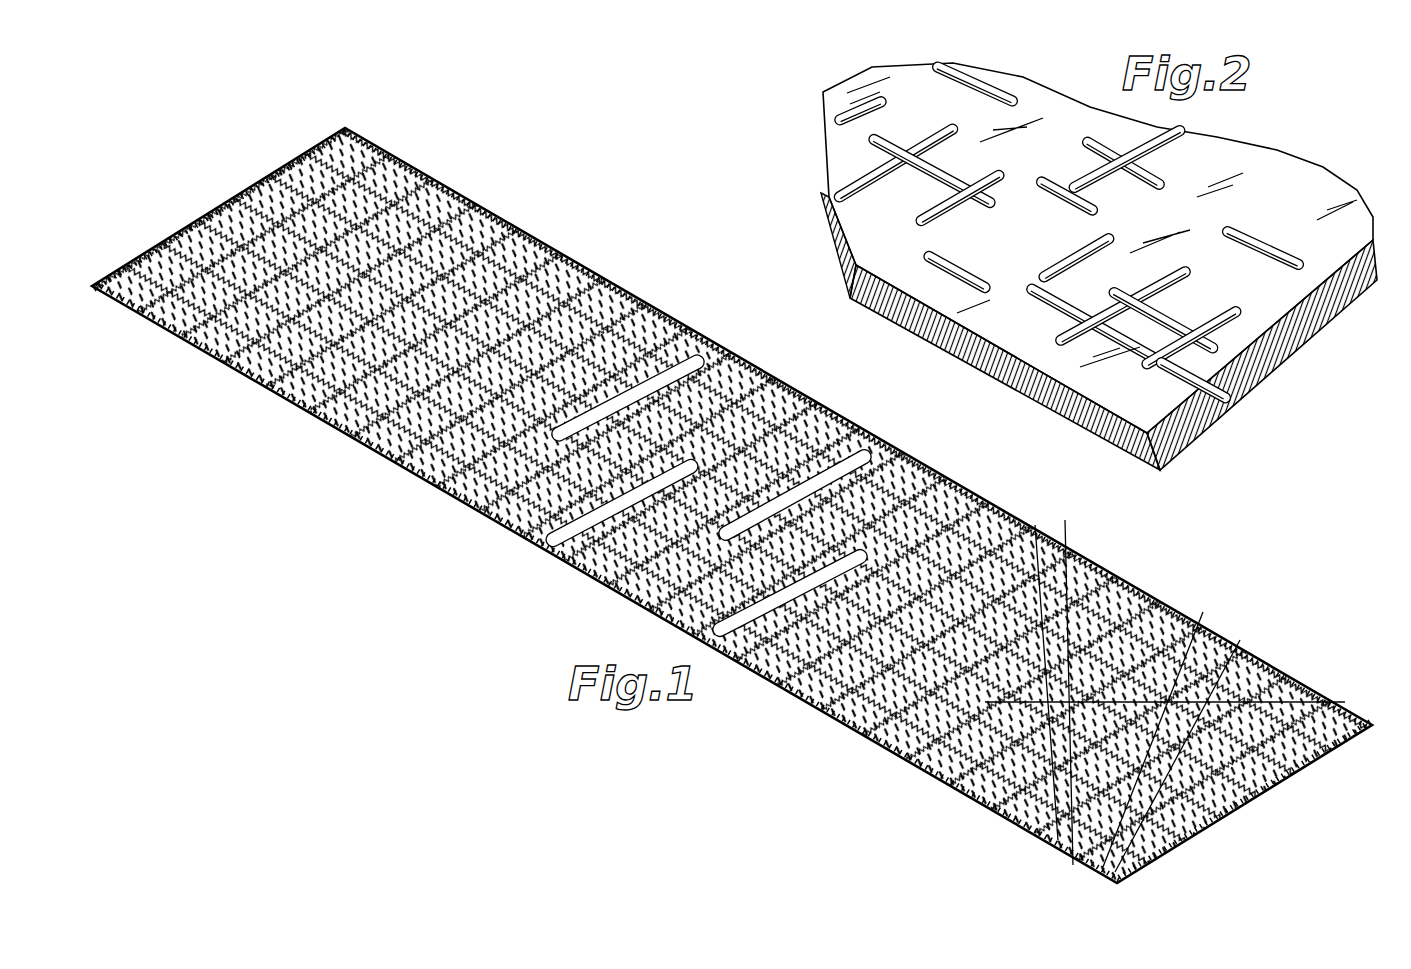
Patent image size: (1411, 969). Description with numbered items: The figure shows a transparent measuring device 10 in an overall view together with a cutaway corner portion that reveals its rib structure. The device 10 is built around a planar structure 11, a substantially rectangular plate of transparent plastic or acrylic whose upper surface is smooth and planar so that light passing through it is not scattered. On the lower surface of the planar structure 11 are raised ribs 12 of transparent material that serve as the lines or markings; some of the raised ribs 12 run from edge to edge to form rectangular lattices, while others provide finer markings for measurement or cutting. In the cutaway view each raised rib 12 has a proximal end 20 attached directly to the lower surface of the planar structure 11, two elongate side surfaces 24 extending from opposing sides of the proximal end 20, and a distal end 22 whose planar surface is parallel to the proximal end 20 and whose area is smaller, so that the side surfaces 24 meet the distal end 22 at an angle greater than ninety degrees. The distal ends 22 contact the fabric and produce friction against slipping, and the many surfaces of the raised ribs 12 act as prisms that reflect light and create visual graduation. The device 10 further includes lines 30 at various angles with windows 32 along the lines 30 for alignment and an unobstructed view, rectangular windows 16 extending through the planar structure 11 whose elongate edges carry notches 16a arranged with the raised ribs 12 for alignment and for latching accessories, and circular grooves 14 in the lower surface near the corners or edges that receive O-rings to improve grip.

In FIG. 1, the transparent measuring device 10 is at (181, 226).
In FIG. 1, the planar structure 11 is at (335, 140).
In FIG. 2, the planar structure 11 is at (845, 92).
In FIG. 1, the raised ribs 12 is at (285, 185).
In FIG. 2, the raised ribs 12 is at (1155, 135).
In FIG. 1, the circular grooves 14 is at (1140, 600).
In FIG. 1, the windows 16 is at (705, 352).
In FIG. 1, the notches 16a is at (882, 455).
In FIG. 2, the proximal end 20 is at (1340, 262).
In FIG. 2, the distal end 22 is at (1200, 152).
In FIG. 2, the side surfaces 24 is at (970, 75).
In FIG. 1, the lines 30 is at (1247, 656).
In FIG. 1, the windows along the lines 32 is at (1045, 560).